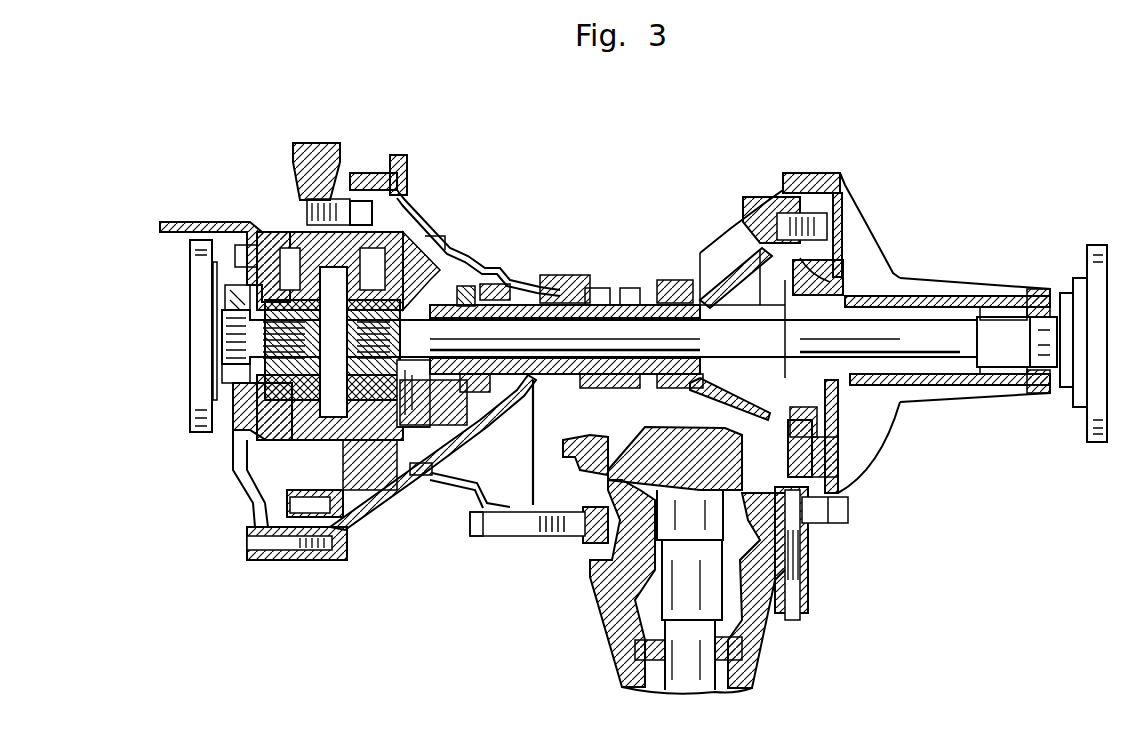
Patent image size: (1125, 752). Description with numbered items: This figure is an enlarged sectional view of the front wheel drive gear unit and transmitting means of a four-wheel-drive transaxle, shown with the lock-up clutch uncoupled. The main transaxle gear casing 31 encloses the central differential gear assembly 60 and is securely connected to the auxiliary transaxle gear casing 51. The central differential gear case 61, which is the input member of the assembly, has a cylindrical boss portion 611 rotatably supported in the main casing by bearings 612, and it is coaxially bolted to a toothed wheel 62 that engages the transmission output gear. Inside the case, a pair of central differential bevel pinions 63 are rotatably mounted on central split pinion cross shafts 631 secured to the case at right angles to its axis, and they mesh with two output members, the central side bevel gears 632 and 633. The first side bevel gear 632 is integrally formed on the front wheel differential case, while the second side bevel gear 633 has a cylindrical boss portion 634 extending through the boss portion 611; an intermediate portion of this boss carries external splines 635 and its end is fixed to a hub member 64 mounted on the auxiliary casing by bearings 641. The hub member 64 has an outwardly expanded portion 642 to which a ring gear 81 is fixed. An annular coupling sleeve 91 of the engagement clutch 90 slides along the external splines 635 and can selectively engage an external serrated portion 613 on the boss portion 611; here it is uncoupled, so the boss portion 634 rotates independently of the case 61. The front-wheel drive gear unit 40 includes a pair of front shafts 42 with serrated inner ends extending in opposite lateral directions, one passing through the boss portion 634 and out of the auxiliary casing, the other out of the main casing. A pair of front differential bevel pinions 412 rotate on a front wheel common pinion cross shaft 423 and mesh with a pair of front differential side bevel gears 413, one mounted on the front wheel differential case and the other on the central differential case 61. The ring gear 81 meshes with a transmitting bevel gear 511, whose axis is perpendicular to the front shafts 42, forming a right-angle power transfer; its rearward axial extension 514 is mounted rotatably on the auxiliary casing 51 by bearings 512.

The main transaxle gear casing 31 is at (323, 557).
The front-wheel drive gear unit 40 is at (372, 437).
The front shafts 42 is at (250, 338).
The auxiliary transaxle gear casing 51 is at (830, 185).
The central differential gear assembly 60 is at (440, 262).
The central differential gear case 61 is at (405, 215).
The toothed wheel 62 is at (290, 497).
The central differential bevel pinions 63 is at (397, 387).
The hub member 64 is at (730, 292).
The ring gear 81 is at (767, 210).
The engagement clutch 90 is at (625, 288).
The annular coupling sleeve 91 is at (610, 292).
The front differential bevel pinions 412 is at (247, 420).
The front differential side bevel gears 413 is at (235, 312).
The front wheel common pinion cross shaft 423 is at (228, 378).
The transmitting bevel gear 511 is at (830, 472).
The bearings 512 is at (800, 523).
The rearward axial extension 514 is at (680, 590).
The cylindrical boss portion 611 is at (533, 390).
The bearings 612 is at (240, 258).
The external serrated portion 613 is at (565, 290).
The central split pinion cross shafts 631 is at (440, 245).
The central side bevel gear 632 is at (425, 480).
The central side bevel gear 633 is at (450, 472).
The cylindrical boss portion 634 is at (566, 388).
The external splines 635 is at (660, 295).
The bearings 641 is at (700, 285).
The outwardly expanded portion 642 is at (885, 288).